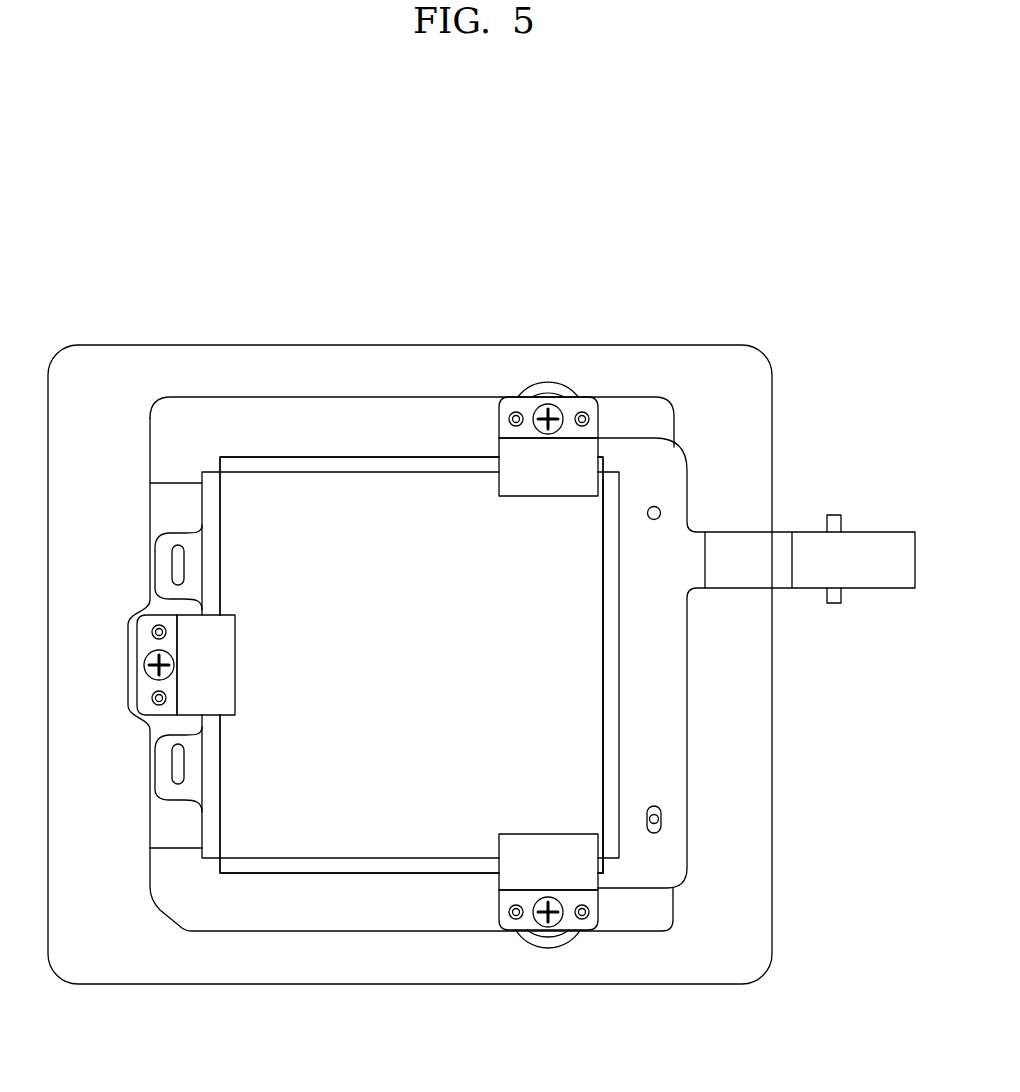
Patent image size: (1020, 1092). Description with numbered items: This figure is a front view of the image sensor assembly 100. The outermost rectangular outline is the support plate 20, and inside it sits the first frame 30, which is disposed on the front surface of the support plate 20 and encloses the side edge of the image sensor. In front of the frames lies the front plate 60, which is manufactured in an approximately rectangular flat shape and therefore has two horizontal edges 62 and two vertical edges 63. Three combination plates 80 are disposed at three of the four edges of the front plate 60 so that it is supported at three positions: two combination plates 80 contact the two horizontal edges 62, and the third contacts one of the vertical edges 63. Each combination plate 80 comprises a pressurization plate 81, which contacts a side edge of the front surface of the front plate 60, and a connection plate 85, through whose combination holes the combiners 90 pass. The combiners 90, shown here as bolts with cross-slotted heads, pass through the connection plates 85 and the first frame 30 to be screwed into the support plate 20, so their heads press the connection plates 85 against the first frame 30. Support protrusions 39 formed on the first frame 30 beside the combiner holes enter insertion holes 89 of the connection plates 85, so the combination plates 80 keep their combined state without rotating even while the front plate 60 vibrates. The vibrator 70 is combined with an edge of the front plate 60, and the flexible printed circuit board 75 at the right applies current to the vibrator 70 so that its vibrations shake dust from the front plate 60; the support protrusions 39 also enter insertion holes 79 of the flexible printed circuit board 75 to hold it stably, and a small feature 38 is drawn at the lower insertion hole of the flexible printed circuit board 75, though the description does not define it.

The image sensor assembly 100 is at (152, 182).
The support plate 20 is at (478, 345).
The first frame 30 is at (410, 395).
The horizontal edges 62 is at (256, 470).
The vibrator 70 is at (303, 455).
The front plate 60 is at (353, 493).
The vertical edges 63 is at (603, 797).
The flexible printed circuit board 75 is at (671, 582).
The insertion holes 79 is at (652, 807).
The hole 38 is at (662, 821).
The combination plates 80 is at (502, 644).
The connection plates 85 is at (593, 428).
The pressurization plates 81 is at (588, 464).
The combiners 90 is at (545, 405).
The support protrusions 39 is at (587, 413).
The insertion holes 89 is at (580, 411).